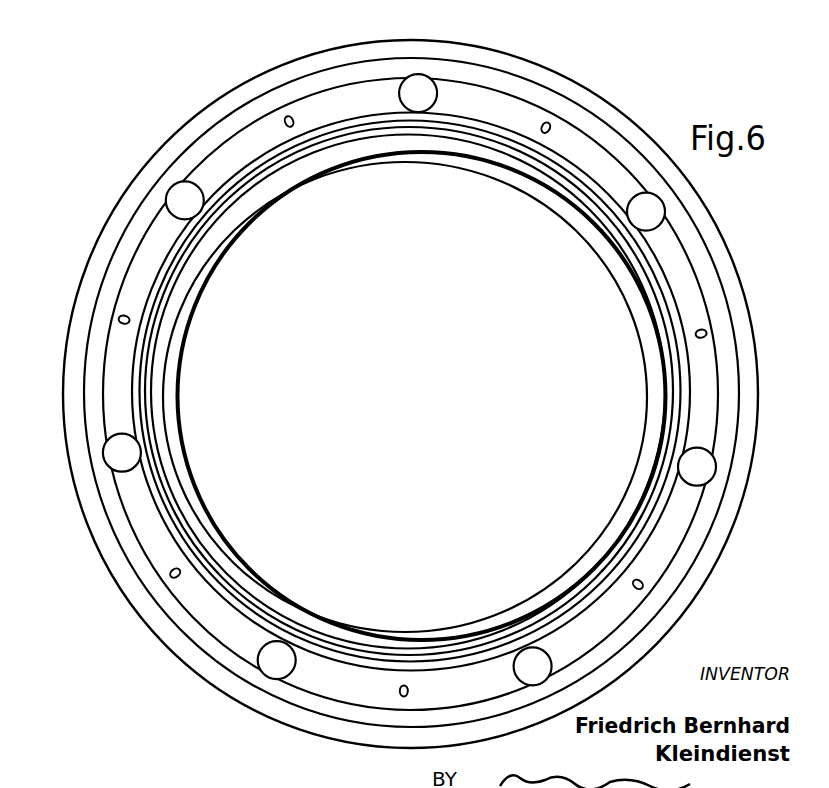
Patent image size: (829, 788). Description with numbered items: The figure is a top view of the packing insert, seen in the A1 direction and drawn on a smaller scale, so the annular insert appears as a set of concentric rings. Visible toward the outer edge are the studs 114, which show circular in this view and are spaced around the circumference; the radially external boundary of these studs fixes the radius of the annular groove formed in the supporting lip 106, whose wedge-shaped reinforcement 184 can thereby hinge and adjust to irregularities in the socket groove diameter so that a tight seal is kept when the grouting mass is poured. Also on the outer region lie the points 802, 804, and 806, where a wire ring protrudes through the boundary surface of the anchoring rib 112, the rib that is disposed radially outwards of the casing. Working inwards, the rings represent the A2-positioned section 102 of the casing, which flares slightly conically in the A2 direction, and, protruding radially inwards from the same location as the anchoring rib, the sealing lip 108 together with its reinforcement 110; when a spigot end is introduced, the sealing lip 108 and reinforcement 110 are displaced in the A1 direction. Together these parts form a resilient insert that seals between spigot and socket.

The A2-positioned section 102 is at (143, 447).
The supporting lip 106 is at (405, 397).
The sealing lip 108 is at (148, 407).
The reinforcement 110 is at (172, 363).
The anchoring rib 112 is at (137, 512).
The studs 114 is at (652, 212).
The wedge-shaped reinforcement 184 is at (170, 635).
The point 802 is at (121, 314).
The point 804 is at (286, 117).
The point 806 is at (550, 123).